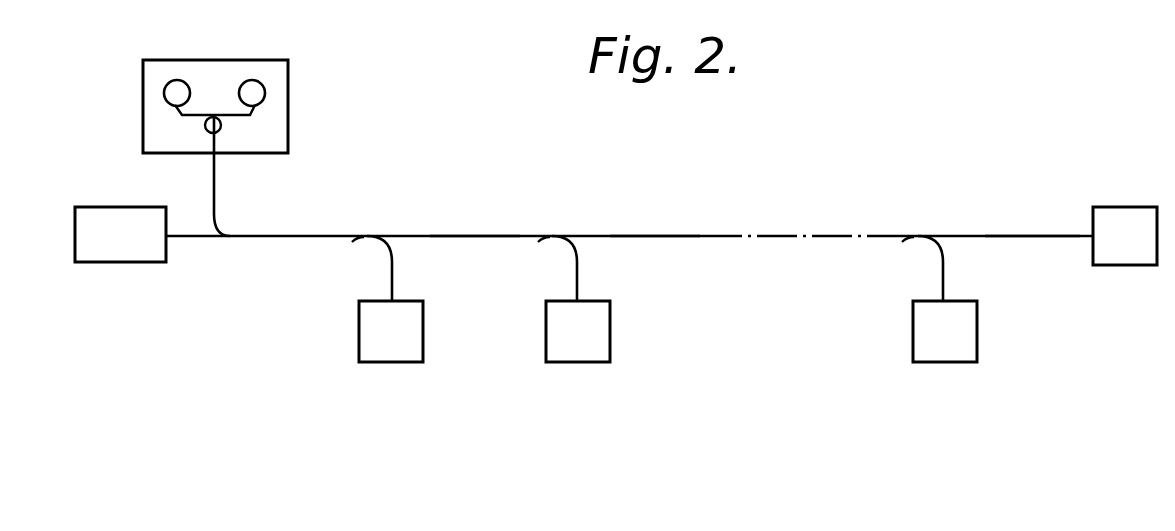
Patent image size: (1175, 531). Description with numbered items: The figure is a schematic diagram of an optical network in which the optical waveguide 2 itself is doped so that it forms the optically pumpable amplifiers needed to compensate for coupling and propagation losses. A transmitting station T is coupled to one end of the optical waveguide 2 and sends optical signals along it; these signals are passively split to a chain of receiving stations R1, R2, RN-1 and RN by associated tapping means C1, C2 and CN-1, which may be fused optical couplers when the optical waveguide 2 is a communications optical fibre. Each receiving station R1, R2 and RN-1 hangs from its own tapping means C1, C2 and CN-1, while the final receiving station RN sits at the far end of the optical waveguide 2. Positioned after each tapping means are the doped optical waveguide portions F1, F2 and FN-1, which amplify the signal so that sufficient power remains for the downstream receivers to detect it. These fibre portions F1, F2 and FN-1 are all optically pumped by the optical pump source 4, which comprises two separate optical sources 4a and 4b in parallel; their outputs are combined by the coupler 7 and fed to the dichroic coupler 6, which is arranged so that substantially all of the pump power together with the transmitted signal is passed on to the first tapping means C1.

The optical waveguide 2 is at (205, 240).
The transmitting station T is at (130, 252).
The optical pump source 4 is at (216, 62).
The optical source 4a is at (170, 83).
The optical source 4b is at (263, 86).
The coupler 7 is at (222, 125).
The dichroic coupler 6 is at (237, 233).
The tapping means C1 is at (368, 233).
The optical waveguide portion F1 is at (455, 233).
The tapping means C2 is at (552, 233).
The optical waveguide portion F2 is at (633, 234).
The tapping means CN-1 is at (918, 235).
The optical waveguide portion FN-1 is at (1015, 235).
The receiving station R1 is at (398, 349).
The receiving station R2 is at (590, 350).
The receiving station RN-1 is at (948, 350).
The receiving station RN is at (1133, 257).